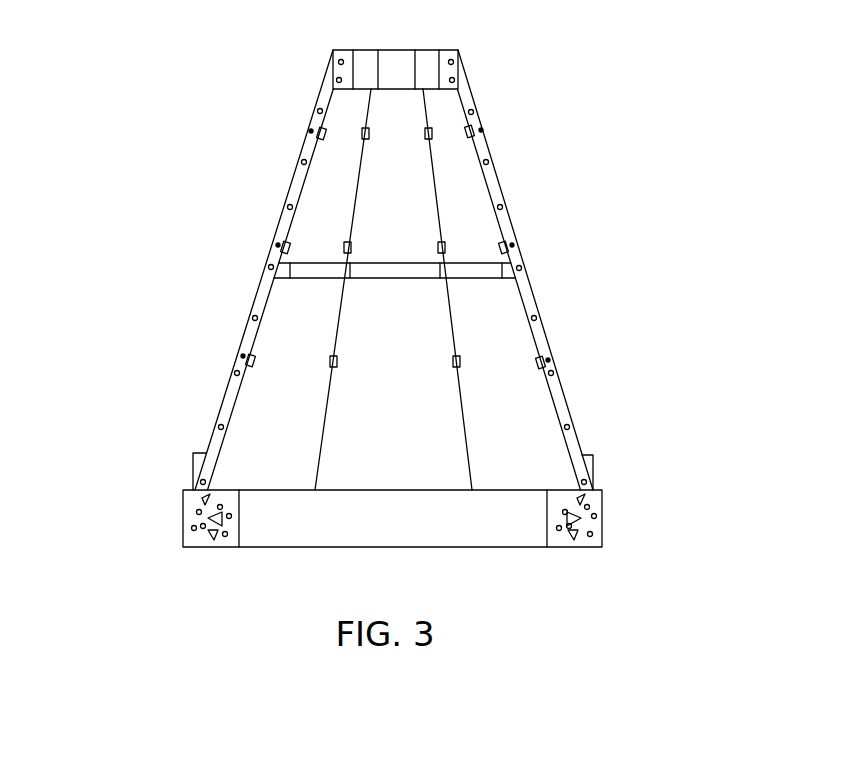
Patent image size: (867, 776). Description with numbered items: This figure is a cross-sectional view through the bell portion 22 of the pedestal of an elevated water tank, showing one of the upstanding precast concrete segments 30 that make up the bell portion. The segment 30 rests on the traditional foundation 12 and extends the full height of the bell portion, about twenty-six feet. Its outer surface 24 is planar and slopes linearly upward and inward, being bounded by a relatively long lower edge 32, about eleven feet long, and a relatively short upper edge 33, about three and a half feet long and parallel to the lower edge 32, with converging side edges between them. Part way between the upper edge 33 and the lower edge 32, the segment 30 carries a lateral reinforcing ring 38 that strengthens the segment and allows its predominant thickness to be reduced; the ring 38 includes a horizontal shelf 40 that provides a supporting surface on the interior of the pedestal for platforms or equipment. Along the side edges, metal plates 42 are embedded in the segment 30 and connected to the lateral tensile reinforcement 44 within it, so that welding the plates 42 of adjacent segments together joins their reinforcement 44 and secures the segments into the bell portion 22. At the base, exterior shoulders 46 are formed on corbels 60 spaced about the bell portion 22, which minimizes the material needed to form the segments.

The foundation 12 is at (469, 518).
The bell portion 22 is at (201, 270).
The outer surface 24 is at (543, 270).
The upstanding precast concrete segment 30 is at (515, 257).
The lower edge 32 is at (569, 289).
The upper edge 33 is at (318, 53).
The lateral reinforcing ring 38 is at (473, 231).
The horizontal shelf 40 is at (570, 219).
The metal plate 42 is at (404, 228).
The lateral tensile reinforcement 44 is at (299, 300).
The exterior shoulder 46 is at (650, 445).
The corbel 60 is at (381, 469).